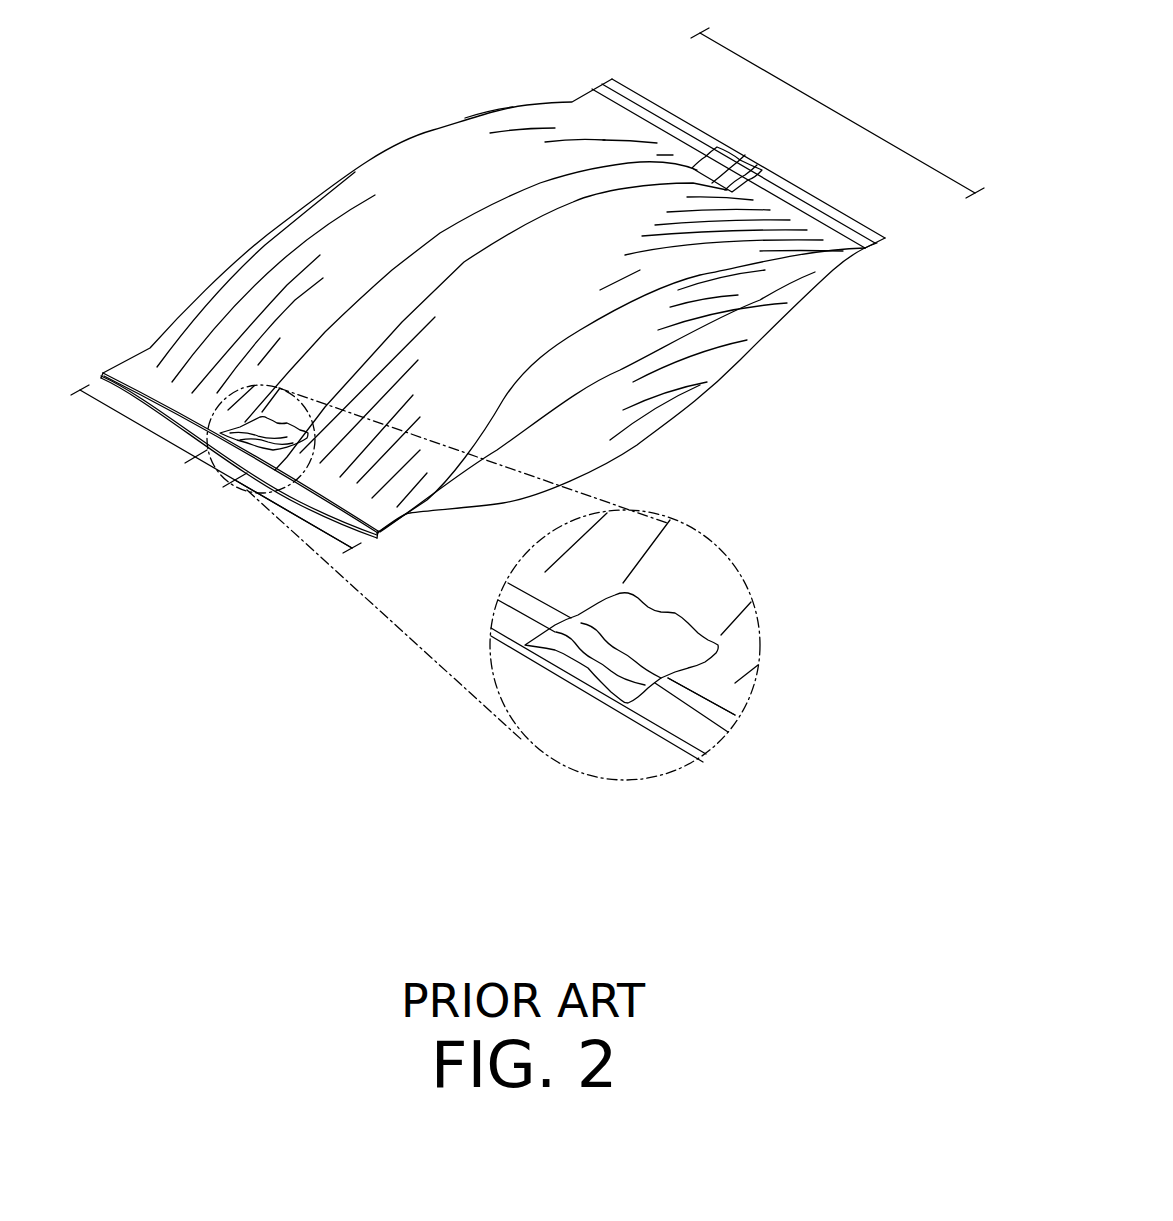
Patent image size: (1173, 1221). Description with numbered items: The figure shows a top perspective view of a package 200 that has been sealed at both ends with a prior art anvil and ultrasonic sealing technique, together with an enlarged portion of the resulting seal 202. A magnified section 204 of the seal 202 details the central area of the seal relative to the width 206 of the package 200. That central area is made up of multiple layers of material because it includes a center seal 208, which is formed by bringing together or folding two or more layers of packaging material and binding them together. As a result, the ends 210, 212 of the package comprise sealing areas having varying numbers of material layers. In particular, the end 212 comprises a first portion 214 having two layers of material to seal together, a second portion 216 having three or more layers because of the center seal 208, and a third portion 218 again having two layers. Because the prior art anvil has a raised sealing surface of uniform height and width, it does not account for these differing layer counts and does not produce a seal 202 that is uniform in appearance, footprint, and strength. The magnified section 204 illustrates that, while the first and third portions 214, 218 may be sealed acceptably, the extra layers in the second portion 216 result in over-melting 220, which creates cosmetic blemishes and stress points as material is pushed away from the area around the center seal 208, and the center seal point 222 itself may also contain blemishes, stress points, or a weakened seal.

The package 200 is at (280, 225).
The seal 202 is at (617, 100).
The magnified section 204 is at (717, 545).
The width 206 is at (840, 113).
The center seal 208 is at (492, 212).
The end 210 is at (693, 127).
The end 212 is at (375, 536).
The first portion 214 is at (137, 424).
The second portion 216 is at (213, 468).
The third portion 218 is at (295, 512).
The over-melting 220 is at (718, 647).
The center seal point 222 is at (666, 675).